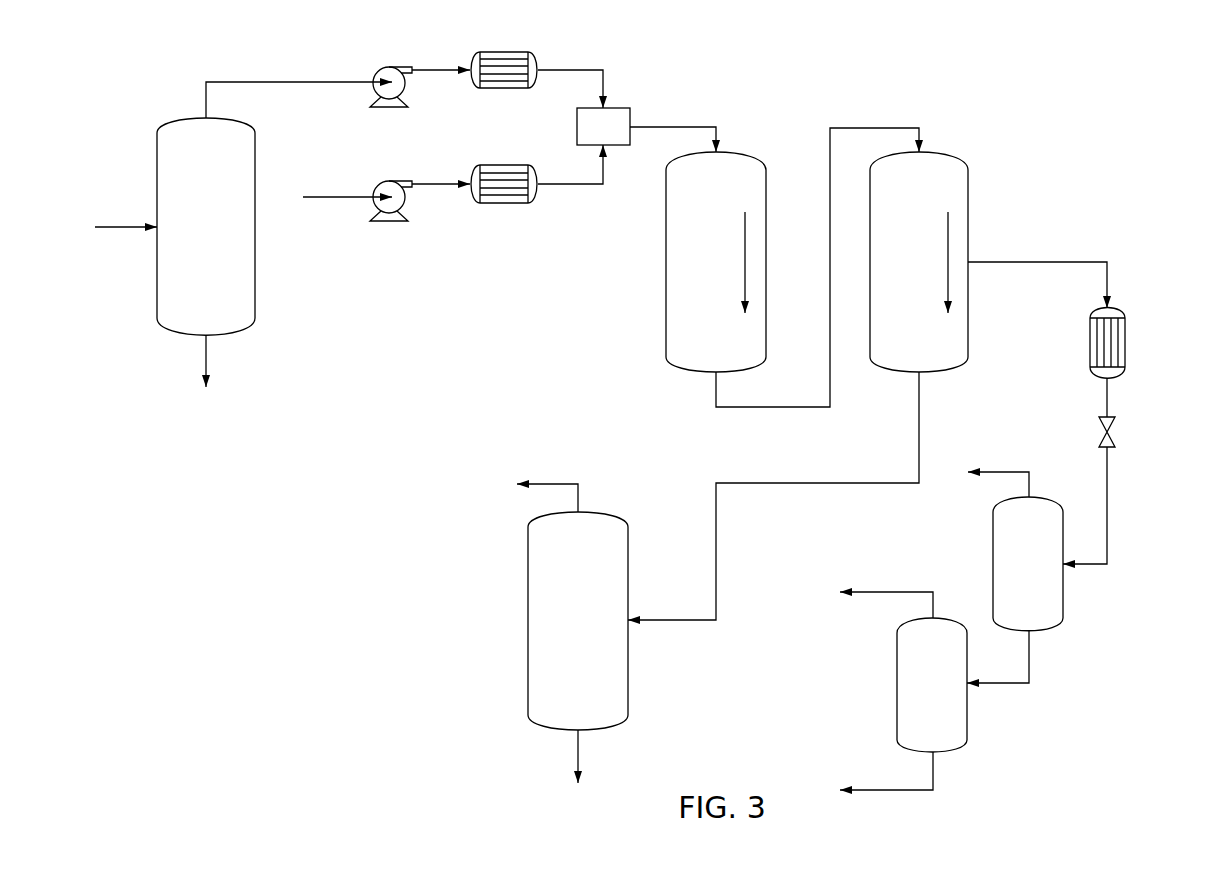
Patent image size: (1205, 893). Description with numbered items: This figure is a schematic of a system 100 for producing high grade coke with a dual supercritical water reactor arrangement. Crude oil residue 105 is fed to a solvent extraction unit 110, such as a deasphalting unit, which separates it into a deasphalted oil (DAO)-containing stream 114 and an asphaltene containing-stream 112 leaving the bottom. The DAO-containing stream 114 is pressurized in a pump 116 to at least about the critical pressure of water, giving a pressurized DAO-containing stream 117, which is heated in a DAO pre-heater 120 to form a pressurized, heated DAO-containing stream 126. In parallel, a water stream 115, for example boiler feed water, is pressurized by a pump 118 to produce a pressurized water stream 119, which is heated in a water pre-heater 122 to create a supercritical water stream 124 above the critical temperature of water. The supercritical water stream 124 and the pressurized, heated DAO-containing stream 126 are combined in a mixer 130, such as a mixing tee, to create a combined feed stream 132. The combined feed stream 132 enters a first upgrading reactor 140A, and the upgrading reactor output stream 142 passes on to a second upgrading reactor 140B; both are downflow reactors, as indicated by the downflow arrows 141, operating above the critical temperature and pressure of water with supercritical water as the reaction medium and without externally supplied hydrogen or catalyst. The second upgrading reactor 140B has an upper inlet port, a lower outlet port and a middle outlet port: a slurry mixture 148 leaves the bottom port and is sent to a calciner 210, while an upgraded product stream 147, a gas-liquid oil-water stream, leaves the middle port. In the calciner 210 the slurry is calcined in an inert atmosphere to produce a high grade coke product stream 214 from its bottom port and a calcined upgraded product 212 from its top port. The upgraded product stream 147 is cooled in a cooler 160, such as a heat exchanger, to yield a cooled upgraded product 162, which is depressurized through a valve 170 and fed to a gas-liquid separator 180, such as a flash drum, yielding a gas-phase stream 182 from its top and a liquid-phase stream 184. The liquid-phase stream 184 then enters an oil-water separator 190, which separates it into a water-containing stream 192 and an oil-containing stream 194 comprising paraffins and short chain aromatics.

The system 100 is at (128, 107).
The crude oil residue 105 is at (112, 227).
The solvent extraction unit 110 is at (206, 226).
The asphaltene containing-stream 112 is at (206, 357).
The DAO-containing stream 114 is at (322, 82).
The water stream 115 is at (330, 197).
The pump 116 is at (390, 66).
The pressurized DAO-containing stream 117 is at (437, 69).
The pump 118 is at (396, 181).
The pressurized water stream 119 is at (444, 184).
The DAO pre-heater 120 is at (505, 52).
The water pre-heater 122 is at (500, 165).
The supercritical water stream 124 is at (578, 70).
The pressurized, heated DAO-containing stream 126 is at (575, 184).
The mixer 130 is at (603, 126).
The combined feed stream 132 is at (668, 127).
The first upgrading reactor 140A is at (716, 262).
The second upgrading reactor 140B is at (919, 262).
The downflow arrows 141 is at (745, 262).
The upgrading reactor output stream 142 is at (782, 407).
The upgraded product stream 147 is at (1060, 262).
The slurry mixture 148 is at (716, 535).
The cooler 160 is at (1125, 345).
The cooled upgraded product 162 is at (1107, 405).
The valve 170 is at (1099, 421).
The gas-liquid separator 180 is at (1028, 564).
The gas-phase stream 182 is at (995, 470).
The liquid-phase stream 184 is at (1003, 683).
The oil-water separator 190 is at (932, 685).
The water-containing stream 192 is at (884, 592).
The oil-containing stream 194 is at (884, 790).
The calciner 210 is at (578, 621).
The calcined upgraded product 212 is at (555, 484).
The high grade coke product stream 214 is at (578, 750).